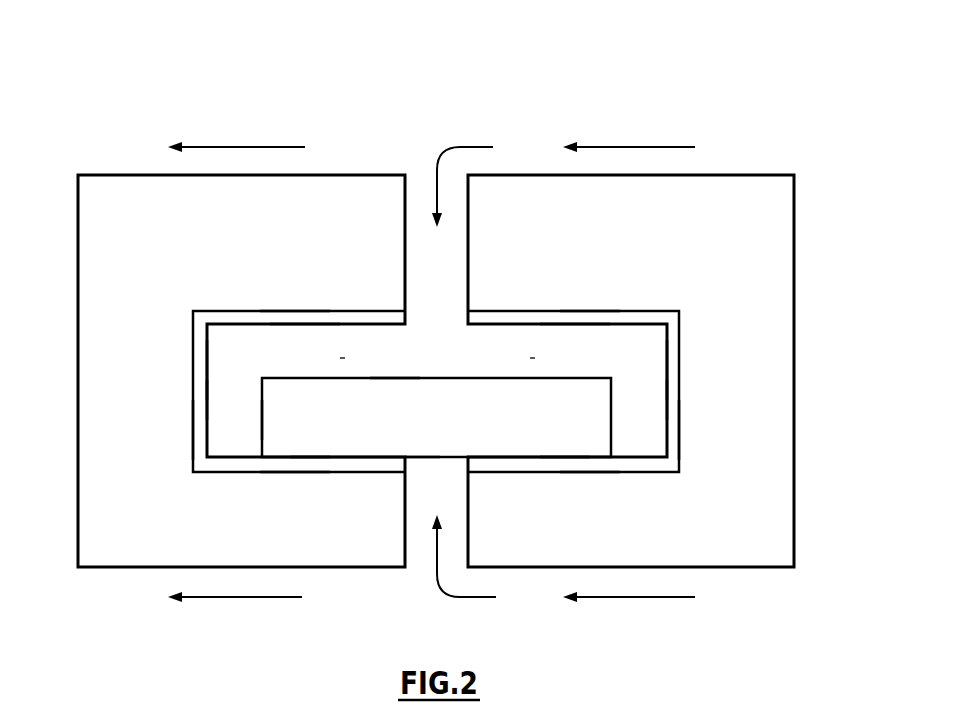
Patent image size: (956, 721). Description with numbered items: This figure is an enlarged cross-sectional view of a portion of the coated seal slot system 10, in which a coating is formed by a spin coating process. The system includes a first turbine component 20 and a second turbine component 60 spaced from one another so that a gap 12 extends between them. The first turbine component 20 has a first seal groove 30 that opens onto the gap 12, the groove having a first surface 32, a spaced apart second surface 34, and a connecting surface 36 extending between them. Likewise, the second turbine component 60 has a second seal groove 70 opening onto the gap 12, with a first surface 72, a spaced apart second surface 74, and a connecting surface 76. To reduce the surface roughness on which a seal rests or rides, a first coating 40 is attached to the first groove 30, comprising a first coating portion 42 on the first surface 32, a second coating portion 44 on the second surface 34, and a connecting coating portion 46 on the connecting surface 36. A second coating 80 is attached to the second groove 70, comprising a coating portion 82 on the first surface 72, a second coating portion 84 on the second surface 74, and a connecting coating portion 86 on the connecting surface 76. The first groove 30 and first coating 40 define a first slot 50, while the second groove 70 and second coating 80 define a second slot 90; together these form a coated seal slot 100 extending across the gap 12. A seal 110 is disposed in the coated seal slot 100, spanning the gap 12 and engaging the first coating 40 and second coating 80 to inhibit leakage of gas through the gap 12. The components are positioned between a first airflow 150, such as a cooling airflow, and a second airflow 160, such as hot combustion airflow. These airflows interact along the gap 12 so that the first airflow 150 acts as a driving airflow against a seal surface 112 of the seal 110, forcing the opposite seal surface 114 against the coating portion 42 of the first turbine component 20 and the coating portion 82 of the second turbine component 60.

The coated seal slot system 10 is at (146, 70).
The gap 12 is at (416, 170).
The first turbine component 20 is at (115, 163).
The first seal groove 30 is at (368, 320).
The first surface 32 is at (290, 470).
The second surface 34 is at (290, 312).
The connecting surface 36 is at (193, 430).
The first coating 40 is at (220, 367).
The first coating portion 42 is at (310, 455).
The second coating portion 44 is at (298, 327).
The connecting coating portion 46 is at (208, 402).
The first slot 50 is at (352, 357).
The second turbine component 60 is at (758, 163).
The second seal groove 70 is at (508, 320).
The first surface 72 is at (583, 470).
The second surface 74 is at (583, 312).
The connecting surface 76 is at (679, 430).
The second coating 80 is at (655, 367).
The second coating portion 82 is at (562, 455).
The second coating portion 84 is at (578, 327).
The connecting coating portion 86 is at (665, 405).
The second slot 90 is at (522, 357).
The coated seal slot 100 is at (460, 368).
The seal 110 is at (460, 428).
The seal surface 112 is at (395, 378).
The seal surface 114 is at (414, 460).
The first airflow 150 is at (252, 147).
The second airflow 160 is at (253, 597).